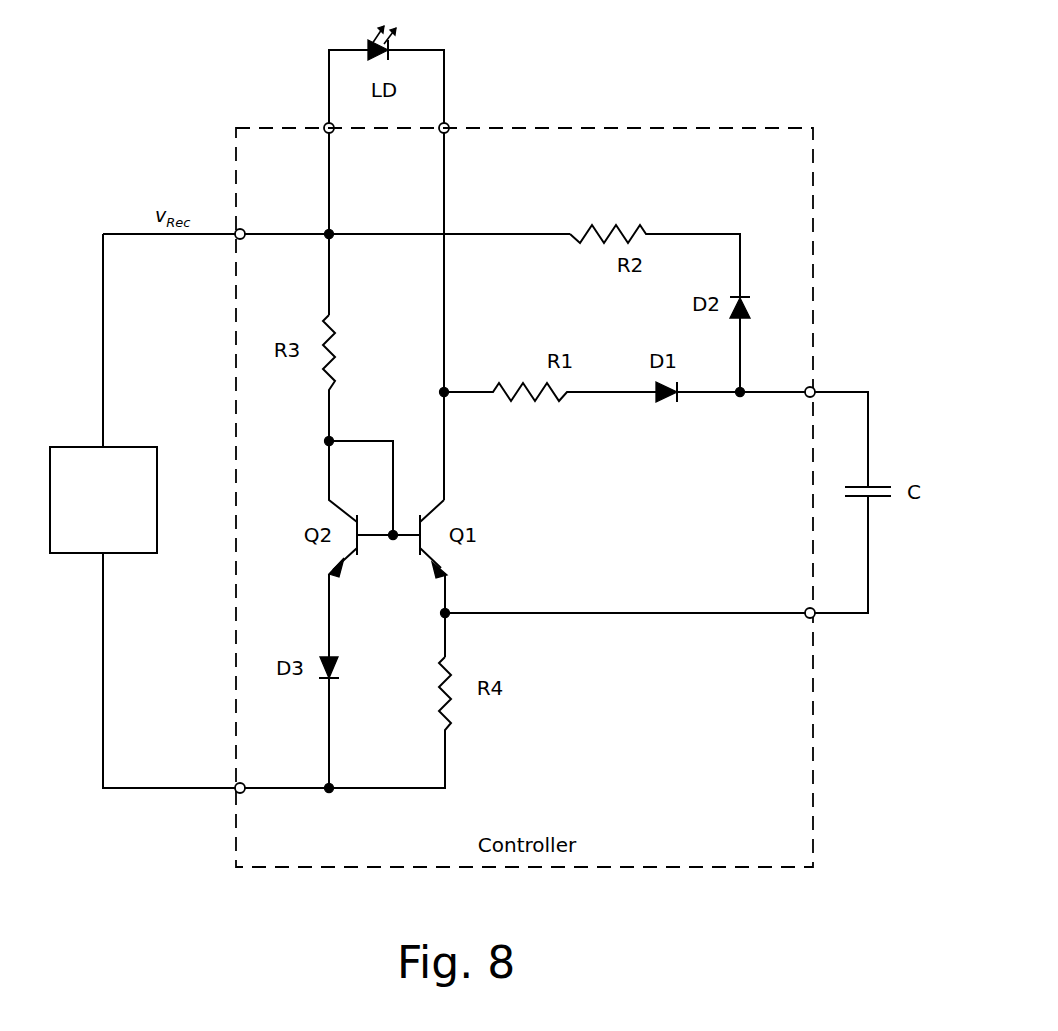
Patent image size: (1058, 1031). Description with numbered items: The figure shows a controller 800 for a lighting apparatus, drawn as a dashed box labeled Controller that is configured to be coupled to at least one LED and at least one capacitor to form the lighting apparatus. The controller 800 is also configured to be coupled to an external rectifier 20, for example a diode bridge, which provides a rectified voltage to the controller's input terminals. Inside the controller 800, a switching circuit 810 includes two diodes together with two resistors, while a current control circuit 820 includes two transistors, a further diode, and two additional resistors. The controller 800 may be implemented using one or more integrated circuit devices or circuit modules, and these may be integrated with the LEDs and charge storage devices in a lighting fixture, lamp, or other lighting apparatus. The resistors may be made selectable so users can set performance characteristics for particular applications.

The rectifier 20 is at (128, 447).
The controller 800 is at (548, 128).
The switching circuit 810 is at (698, 204).
The current control circuit 820 is at (514, 731).